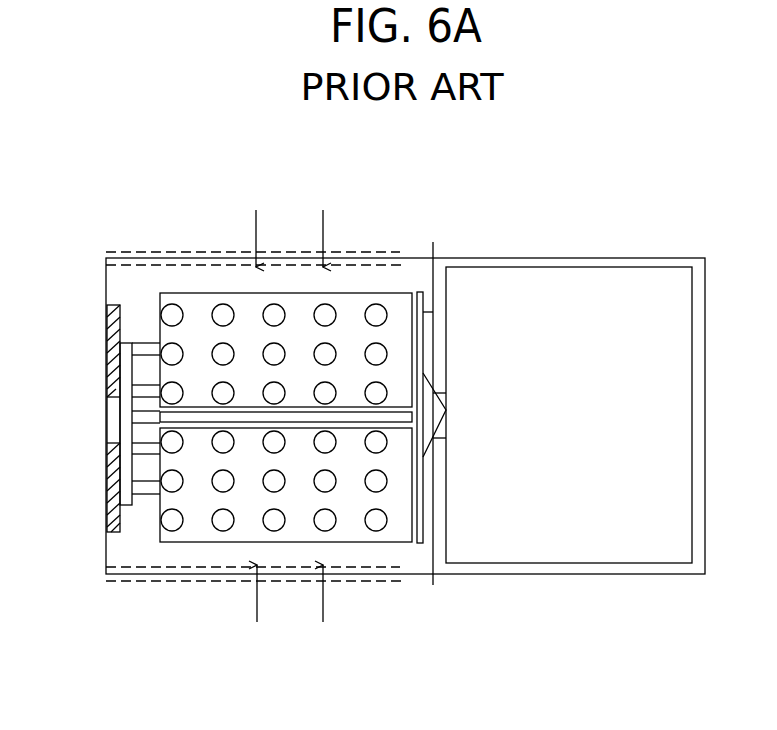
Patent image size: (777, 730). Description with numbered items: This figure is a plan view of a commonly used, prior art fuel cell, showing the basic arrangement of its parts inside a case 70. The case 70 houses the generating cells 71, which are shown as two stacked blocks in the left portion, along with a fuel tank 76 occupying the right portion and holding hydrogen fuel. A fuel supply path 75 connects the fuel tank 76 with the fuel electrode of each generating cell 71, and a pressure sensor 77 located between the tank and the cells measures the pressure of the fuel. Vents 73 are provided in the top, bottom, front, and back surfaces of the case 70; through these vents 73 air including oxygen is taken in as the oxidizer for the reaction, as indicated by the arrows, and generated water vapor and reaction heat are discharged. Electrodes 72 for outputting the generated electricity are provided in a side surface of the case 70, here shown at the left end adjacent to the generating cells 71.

The case 70 is at (608, 257).
The generating cell 71 is at (187, 300).
The electrodes 72 is at (110, 480).
The vents 73 is at (327, 312).
The fuel supply path 75 is at (390, 413).
The fuel tank 76 is at (593, 547).
The pressure sensor 77 is at (447, 433).